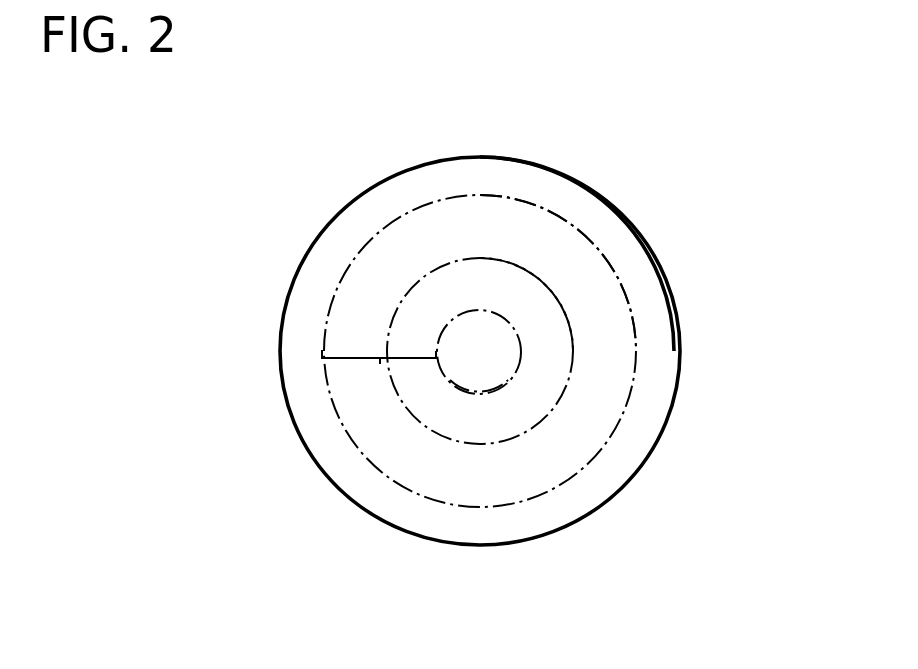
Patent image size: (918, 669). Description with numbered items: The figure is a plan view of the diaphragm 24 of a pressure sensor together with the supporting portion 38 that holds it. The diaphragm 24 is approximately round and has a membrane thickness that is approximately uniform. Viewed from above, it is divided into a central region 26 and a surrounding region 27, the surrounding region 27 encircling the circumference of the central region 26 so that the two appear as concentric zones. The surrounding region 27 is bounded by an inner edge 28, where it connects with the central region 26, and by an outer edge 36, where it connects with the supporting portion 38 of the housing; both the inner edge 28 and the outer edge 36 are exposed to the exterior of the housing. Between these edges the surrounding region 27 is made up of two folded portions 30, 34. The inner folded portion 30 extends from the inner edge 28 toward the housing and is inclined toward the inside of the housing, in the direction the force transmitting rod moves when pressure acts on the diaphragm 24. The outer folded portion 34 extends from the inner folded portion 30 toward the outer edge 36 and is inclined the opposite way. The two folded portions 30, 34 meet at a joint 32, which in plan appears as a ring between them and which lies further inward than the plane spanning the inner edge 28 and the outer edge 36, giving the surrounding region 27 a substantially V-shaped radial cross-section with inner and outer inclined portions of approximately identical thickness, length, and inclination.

The diaphragm 24 is at (360, 192).
The central region 26 is at (487, 330).
The surrounding region 27 is at (379, 358).
The inner edge 28 is at (483, 395).
The folded portion 30 is at (530, 305).
The joint 32 is at (540, 422).
The folded portion 34 is at (583, 280).
The outer edge 36 is at (615, 438).
The supporting portion 38 is at (628, 258).